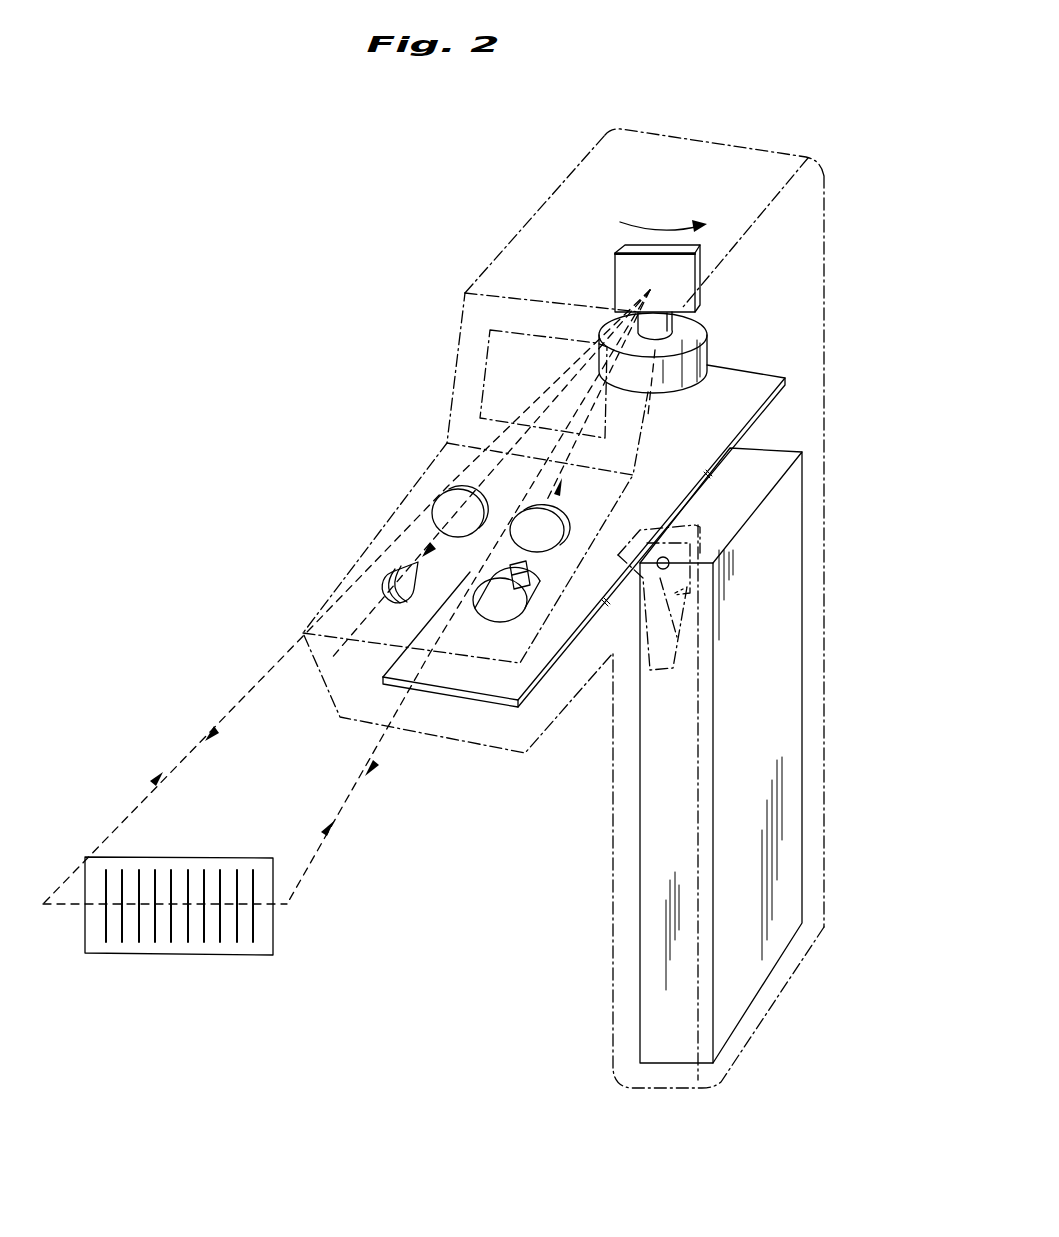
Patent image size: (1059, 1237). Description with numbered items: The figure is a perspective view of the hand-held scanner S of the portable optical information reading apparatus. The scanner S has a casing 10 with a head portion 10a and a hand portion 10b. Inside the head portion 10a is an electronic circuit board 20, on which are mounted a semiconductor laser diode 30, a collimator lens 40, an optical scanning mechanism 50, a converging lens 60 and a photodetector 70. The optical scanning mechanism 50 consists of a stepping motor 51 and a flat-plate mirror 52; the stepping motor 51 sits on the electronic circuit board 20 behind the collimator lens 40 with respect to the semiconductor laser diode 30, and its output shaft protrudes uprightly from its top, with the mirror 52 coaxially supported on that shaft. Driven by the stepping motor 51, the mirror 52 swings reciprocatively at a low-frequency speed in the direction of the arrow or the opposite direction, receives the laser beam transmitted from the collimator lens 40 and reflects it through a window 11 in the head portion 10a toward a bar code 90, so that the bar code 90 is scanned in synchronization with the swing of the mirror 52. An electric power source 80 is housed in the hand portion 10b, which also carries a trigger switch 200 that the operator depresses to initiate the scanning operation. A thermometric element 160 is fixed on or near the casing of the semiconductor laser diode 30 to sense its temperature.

The hand-held scanner S is at (720, 128).
The casing 10 is at (829, 752).
The head portion 10a is at (763, 165).
The hand portion 10b is at (613, 978).
The window 11 is at (490, 352).
The electronic circuit board 20 is at (778, 377).
The semiconductor laser diode 30 is at (494, 614).
The thermometric element 160 is at (531, 578).
The collimator lens 40 is at (570, 514).
The optical scanning mechanism 50 is at (614, 268).
The stepping motor 51 is at (708, 340).
The flat-plate mirror 52 is at (700, 262).
The converging lens 60 is at (432, 500).
The photodetector 70 is at (385, 576).
The electric power source 80 is at (792, 860).
The bar code 90 is at (274, 930).
The trigger switch 200 is at (688, 612).